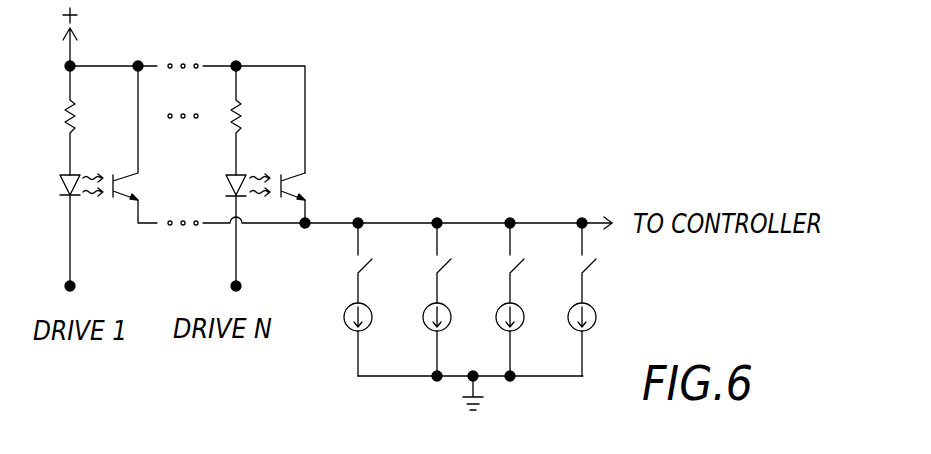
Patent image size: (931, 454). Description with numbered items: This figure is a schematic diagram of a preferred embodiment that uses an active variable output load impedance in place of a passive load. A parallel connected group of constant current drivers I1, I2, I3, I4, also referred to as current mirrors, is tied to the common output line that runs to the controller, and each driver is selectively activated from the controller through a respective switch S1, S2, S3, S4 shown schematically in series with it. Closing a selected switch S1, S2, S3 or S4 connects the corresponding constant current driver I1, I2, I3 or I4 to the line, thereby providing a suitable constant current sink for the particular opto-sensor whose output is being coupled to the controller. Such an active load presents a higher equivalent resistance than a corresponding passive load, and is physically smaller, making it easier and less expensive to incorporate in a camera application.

The switch S1 is at (339, 260).
The switch S2 is at (422, 260).
The switch S3 is at (497, 260).
The switch S4 is at (570, 260).
The constant current driver I1 is at (338, 339).
The constant current driver I2 is at (420, 339).
The constant current driver I3 is at (495, 339).
The constant current driver I4 is at (566, 339).